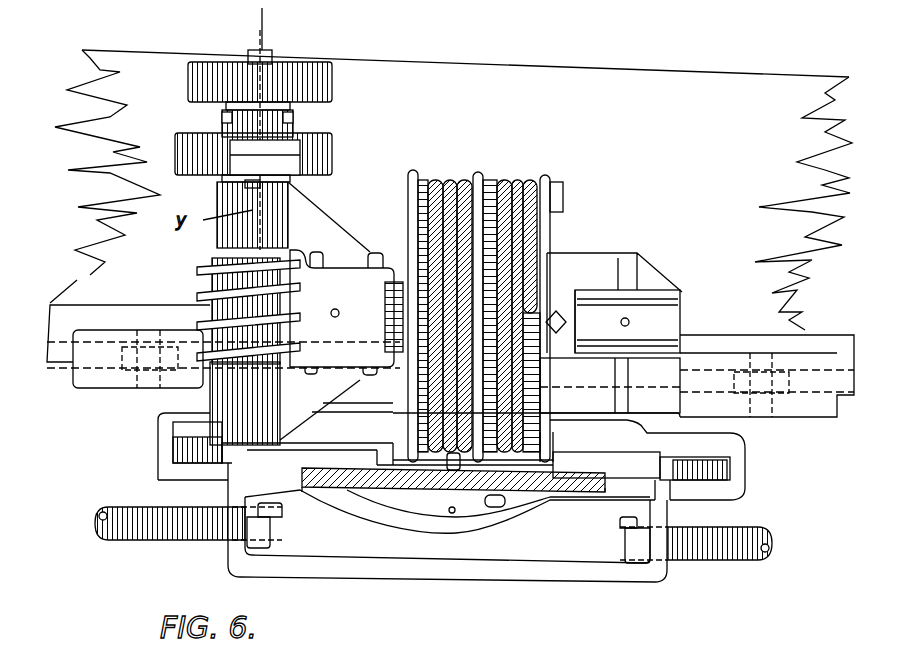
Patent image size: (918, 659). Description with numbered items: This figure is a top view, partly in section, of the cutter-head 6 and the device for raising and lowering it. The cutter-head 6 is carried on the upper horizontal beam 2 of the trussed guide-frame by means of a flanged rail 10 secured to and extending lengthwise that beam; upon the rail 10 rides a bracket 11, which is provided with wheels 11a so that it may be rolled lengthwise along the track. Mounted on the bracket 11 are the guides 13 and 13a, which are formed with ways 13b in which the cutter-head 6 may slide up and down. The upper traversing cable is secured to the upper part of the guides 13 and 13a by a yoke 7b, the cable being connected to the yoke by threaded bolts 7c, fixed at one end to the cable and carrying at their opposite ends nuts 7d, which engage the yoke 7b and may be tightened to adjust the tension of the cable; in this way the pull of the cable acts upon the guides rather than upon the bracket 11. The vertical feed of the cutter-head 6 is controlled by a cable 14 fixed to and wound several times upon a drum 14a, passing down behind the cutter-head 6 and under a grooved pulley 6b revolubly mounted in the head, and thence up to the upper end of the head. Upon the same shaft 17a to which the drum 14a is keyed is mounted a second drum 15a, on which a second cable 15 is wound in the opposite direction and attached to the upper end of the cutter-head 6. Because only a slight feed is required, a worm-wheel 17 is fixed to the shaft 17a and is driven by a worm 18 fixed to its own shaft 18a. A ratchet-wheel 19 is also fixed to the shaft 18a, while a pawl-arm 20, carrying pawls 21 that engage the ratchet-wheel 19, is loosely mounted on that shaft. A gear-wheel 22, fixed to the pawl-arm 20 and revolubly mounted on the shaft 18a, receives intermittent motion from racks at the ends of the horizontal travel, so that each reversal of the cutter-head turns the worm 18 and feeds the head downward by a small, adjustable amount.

The upper horizontal beam 2 is at (453, 190).
The cutter-head 6 is at (375, 486).
The grooved pulley 6b is at (437, 511).
The yoke 7b is at (453, 572).
The threaded bolts 7c is at (100, 520).
The nuts 7d is at (268, 531).
The flanged rail 10 is at (67, 358).
The bracket 11 is at (180, 380).
The wheels 11a is at (127, 367).
The guide 13 is at (451, 456).
The guide 13a is at (641, 476).
The ways 13b is at (302, 489).
The cable 14 is at (450, 182).
The drum 14a is at (418, 192).
The second cable 15 is at (543, 192).
The second drum 15a is at (490, 193).
The worm-wheel 17 is at (218, 283).
The shaft 17a is at (577, 288).
The worm 18 is at (217, 263).
The shaft 18a is at (261, 52).
The ratchet-wheel 19 is at (178, 138).
The pawl-arm 20 is at (273, 128).
The pawls 21 is at (285, 170).
The gear-wheel 22 is at (240, 68).